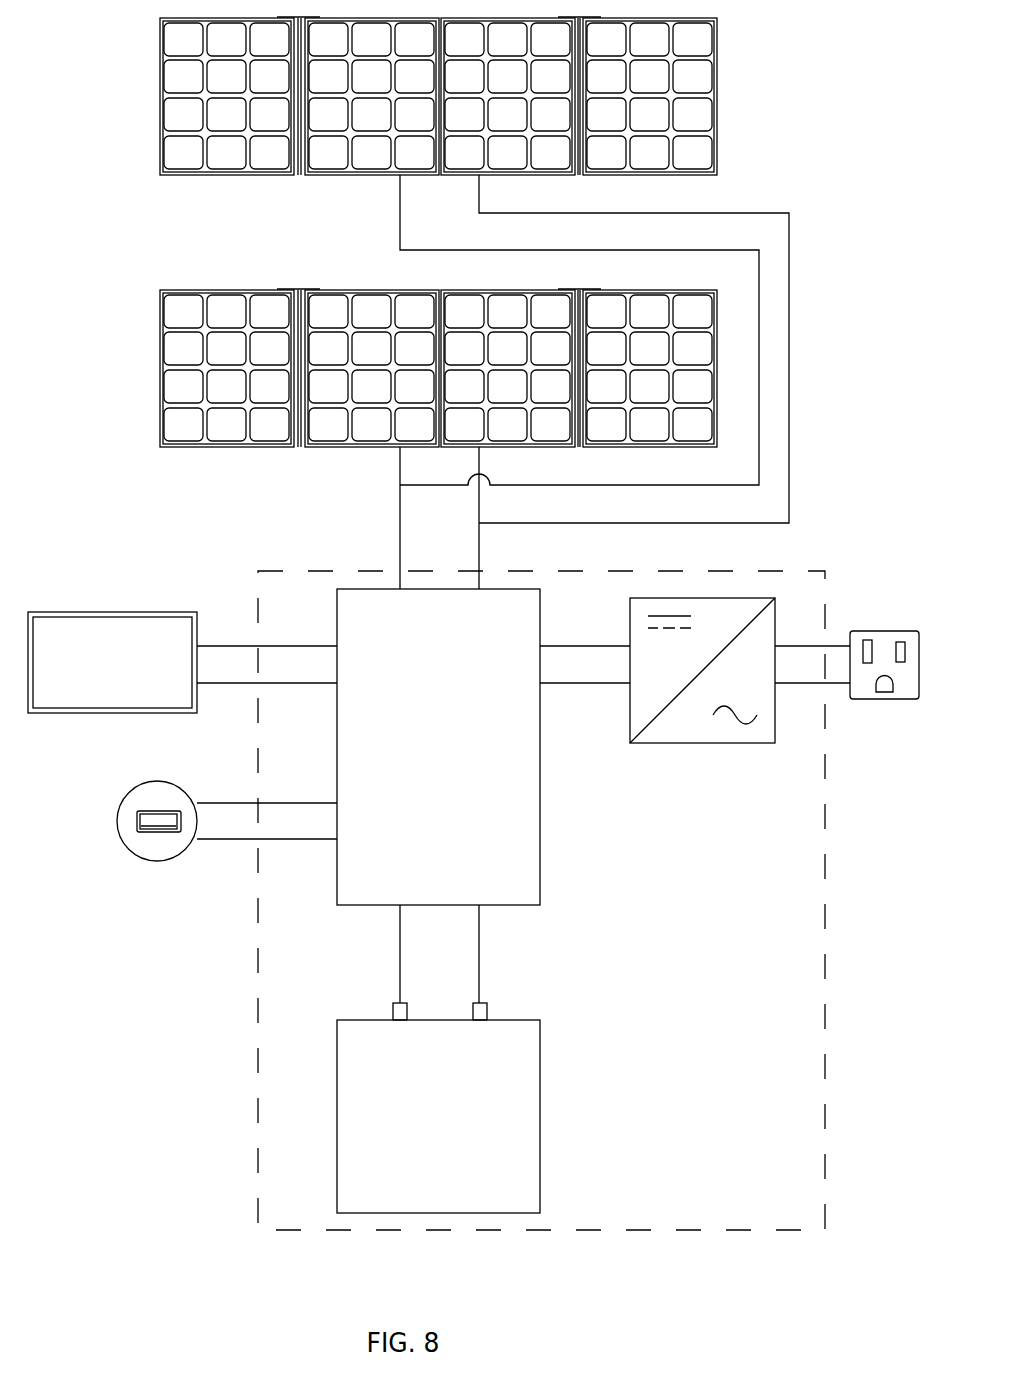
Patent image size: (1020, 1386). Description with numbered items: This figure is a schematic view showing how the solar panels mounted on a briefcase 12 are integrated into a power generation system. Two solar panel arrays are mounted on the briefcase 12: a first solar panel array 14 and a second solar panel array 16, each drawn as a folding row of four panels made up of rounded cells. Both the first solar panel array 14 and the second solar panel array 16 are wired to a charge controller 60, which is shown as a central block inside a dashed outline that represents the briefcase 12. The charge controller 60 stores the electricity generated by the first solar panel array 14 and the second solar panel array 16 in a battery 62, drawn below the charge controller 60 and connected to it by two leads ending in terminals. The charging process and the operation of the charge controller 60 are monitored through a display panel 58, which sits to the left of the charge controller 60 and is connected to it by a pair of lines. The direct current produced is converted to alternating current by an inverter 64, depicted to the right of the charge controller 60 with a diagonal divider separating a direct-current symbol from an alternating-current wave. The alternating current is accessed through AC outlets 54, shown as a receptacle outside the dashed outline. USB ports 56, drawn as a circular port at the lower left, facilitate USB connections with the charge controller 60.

The briefcase 12 is at (257, 1078).
The first solar panel array 14 is at (187, 463).
The second solar panel array 16 is at (182, 192).
The AC outlets 54 is at (884, 701).
The USB ports 56 is at (130, 857).
The display panel 58 is at (182, 662).
The charge controller 60 is at (438, 747).
The battery 62 is at (438, 1059).
The inverter 64 is at (685, 744).